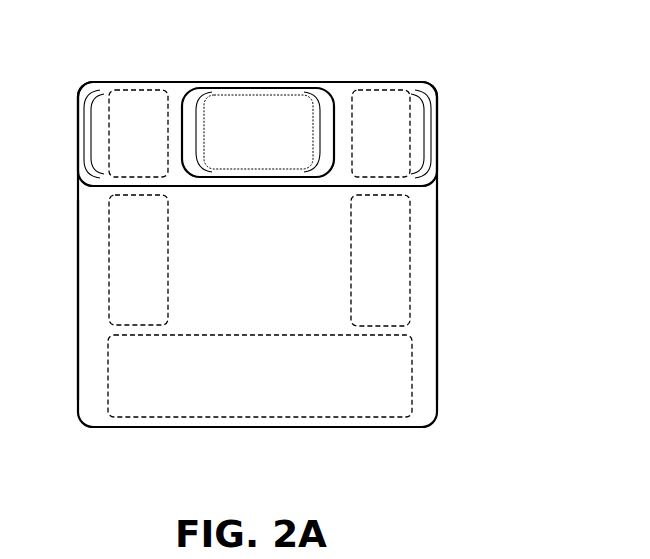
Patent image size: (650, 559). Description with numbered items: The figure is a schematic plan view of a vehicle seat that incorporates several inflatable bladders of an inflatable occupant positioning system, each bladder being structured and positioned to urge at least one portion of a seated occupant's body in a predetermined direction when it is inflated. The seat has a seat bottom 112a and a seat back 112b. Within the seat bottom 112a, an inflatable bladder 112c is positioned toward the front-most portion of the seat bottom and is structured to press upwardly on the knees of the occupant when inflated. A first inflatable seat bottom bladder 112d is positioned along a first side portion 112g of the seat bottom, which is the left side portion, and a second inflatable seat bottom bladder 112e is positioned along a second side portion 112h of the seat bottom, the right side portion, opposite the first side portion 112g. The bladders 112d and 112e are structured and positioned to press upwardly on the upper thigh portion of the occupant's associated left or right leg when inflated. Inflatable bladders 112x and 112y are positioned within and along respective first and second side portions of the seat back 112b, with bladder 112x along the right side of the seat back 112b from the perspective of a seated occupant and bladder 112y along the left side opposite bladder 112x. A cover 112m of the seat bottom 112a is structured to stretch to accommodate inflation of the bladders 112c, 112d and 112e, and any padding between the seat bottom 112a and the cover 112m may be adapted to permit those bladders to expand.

The seat bottom 112a is at (438, 243).
The seat back 112b is at (437, 133).
The inflatable bladder 112c is at (153, 380).
The first inflatable seat bottom bladder 112d is at (400, 307).
The second inflatable seat bottom bladder 112e is at (125, 273).
The first side portion 112g is at (437, 216).
The second side portion 112h is at (78, 230).
The cover 112m is at (265, 275).
The inflatable bladder 112x is at (150, 107).
The inflatable bladder 112y is at (383, 115).